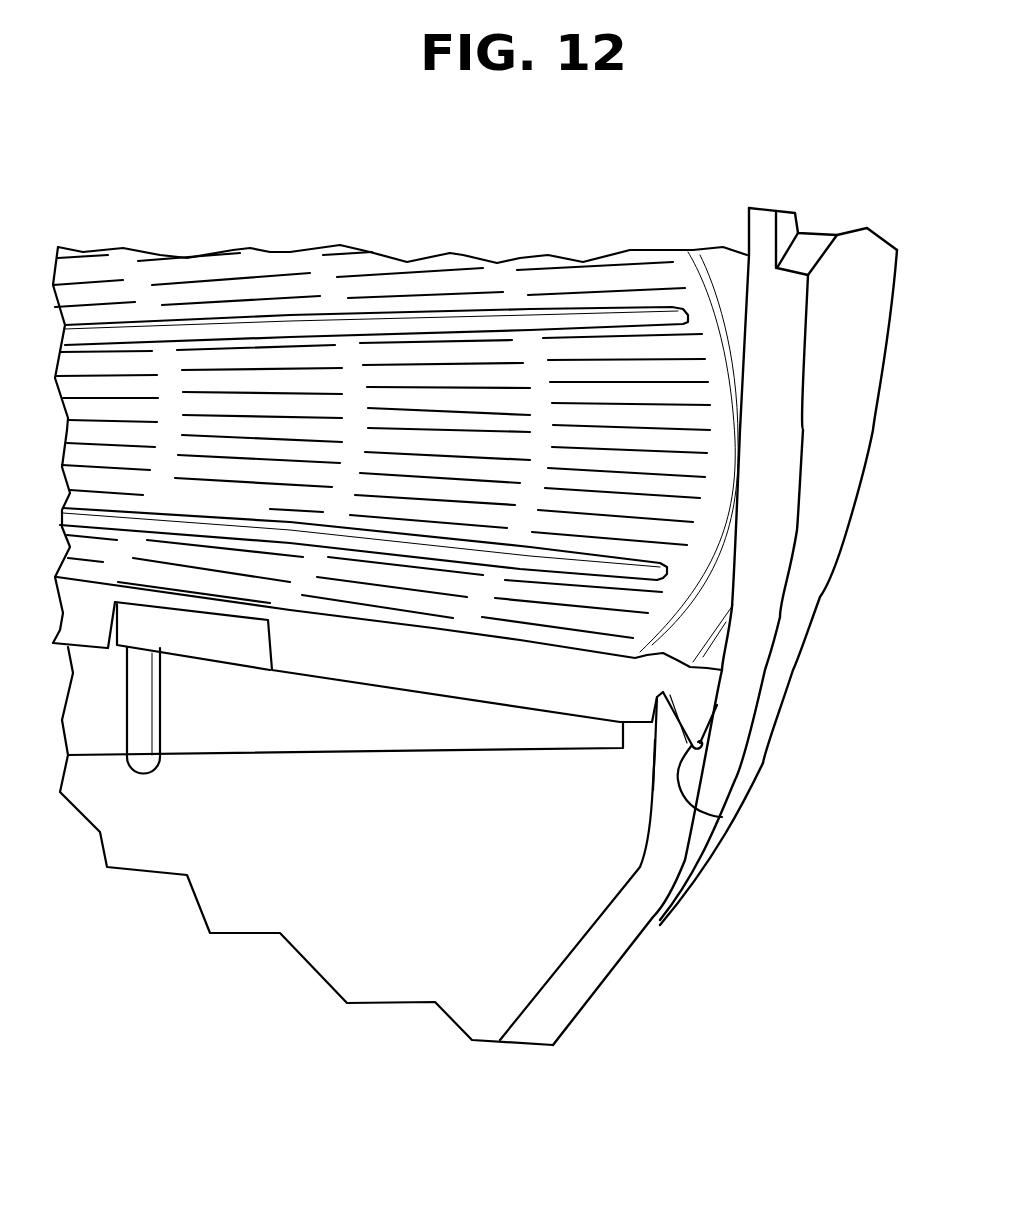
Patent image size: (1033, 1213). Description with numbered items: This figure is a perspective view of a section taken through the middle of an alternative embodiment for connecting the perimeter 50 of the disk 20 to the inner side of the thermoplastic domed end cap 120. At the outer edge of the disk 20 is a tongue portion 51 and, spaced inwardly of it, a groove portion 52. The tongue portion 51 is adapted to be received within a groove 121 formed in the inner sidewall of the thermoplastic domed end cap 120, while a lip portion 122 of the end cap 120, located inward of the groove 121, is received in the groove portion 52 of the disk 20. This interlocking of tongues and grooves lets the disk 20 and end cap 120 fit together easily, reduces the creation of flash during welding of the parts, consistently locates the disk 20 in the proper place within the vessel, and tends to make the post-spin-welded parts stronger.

The disk 20 is at (375, 662).
The perimeter 50 is at (717, 707).
The tongue portion 51 is at (700, 748).
The groove portion 52 is at (660, 692).
The thermoplastic domed end cap 120 is at (647, 815).
The groove 121 is at (722, 817).
The lip portion 122 is at (647, 767).